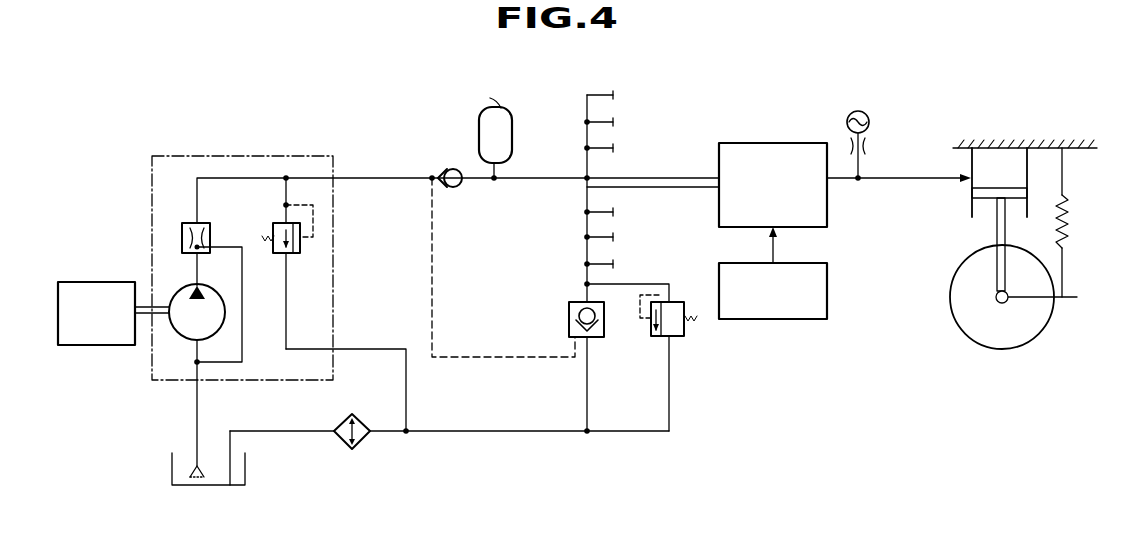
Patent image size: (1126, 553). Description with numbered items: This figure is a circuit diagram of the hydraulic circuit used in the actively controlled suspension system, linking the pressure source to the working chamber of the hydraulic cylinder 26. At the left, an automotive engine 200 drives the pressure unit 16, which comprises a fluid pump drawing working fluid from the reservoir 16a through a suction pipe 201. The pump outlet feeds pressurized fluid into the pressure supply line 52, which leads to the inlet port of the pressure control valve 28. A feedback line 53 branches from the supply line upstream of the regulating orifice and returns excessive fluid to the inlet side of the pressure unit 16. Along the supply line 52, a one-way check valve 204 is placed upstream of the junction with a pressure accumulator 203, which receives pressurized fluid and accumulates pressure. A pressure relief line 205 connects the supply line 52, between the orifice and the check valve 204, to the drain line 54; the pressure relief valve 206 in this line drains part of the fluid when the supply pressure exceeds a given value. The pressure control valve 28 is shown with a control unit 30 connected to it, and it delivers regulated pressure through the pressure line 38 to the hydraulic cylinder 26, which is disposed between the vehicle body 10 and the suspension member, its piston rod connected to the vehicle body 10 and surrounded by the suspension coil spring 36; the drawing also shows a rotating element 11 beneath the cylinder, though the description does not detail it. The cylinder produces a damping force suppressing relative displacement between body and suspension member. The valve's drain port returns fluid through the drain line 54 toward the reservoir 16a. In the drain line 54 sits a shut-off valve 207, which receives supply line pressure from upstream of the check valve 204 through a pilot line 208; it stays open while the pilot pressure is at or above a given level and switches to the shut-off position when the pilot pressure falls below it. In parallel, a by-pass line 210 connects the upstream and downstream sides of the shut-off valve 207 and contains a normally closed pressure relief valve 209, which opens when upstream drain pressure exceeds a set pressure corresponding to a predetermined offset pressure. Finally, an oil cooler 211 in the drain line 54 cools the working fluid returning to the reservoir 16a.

The automotive engine 200 is at (94, 281).
The pressure unit 16 is at (173, 340).
The reservoir 16a is at (172, 467).
The suction pipe 201 is at (199, 416).
The feedback line 53 is at (243, 279).
The pressure supply line 52 is at (361, 176).
The pressure relief valve 206 is at (300, 250).
The pressure relief line 205 is at (287, 312).
The pressure drain line 54 is at (527, 434).
The oil cooler 211 is at (365, 444).
The one-way check valve 204 is at (447, 170).
The pressure accumulator 203 is at (512, 122).
The pilot line 208 is at (433, 302).
The shut-off valve 207 is at (569, 328).
The pressure relief valve 209 is at (684, 337).
The by-pass line 210 is at (668, 383).
The pressure control valve unit 28 is at (764, 142).
The control unit 30 is at (783, 320).
The pressure line 38 is at (849, 181).
The vehicle body 10 is at (1030, 146).
The hydraulic cylinder 26 is at (972, 187).
The suspension coil spring 36 is at (1066, 232).
The crank / rotating body 11 is at (1002, 350).